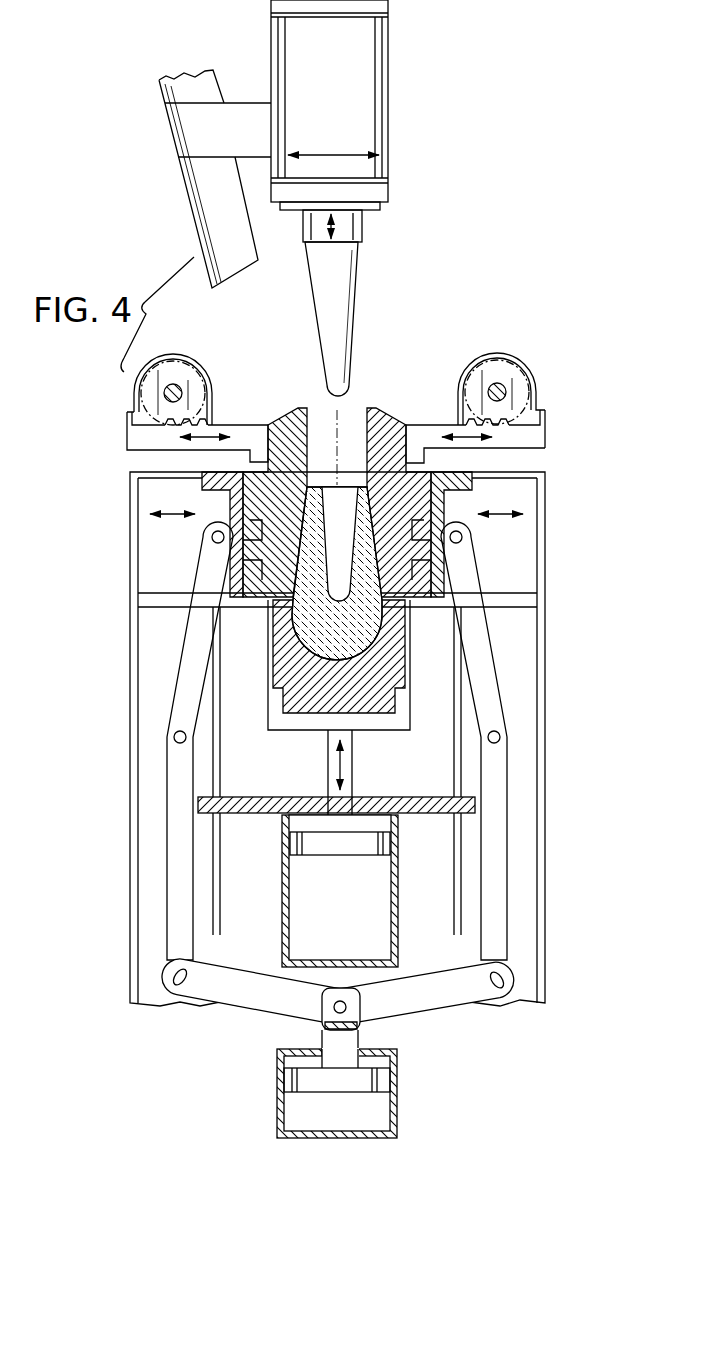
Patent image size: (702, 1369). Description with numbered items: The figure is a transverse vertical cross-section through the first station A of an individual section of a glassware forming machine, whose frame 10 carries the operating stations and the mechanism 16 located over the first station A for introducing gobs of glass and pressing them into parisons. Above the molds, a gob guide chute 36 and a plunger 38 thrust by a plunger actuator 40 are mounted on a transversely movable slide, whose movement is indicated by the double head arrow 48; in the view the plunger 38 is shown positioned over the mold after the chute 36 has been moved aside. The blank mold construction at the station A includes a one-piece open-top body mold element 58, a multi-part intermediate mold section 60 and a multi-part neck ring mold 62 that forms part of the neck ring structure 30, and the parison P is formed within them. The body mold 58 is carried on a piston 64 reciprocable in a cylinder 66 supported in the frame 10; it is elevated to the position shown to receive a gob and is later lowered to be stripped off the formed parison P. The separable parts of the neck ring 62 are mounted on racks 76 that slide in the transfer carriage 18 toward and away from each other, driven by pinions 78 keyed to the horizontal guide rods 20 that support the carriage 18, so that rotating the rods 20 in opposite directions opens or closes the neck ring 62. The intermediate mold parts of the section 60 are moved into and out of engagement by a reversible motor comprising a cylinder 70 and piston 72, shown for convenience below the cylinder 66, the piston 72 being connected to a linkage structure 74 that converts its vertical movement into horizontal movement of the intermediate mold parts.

The frame 10 is at (547, 578).
The mechanism 16 is at (196, 186).
The carriage 18 is at (335, 374).
The guide rods 20 is at (153, 396).
The neck ring structure 30 is at (364, 400).
The gob guide chutes 36 is at (194, 216).
The plungers 38 is at (384, 296).
The plunger actuator 40 is at (341, 57).
The double head arrow 48 is at (350, 155).
The body mold element 58 is at (386, 666).
The intermediate mold section 60 is at (351, 491).
The neck ring mold 62 is at (376, 432).
The piston 64 is at (356, 846).
The cylinder 66 is at (354, 848).
The cylinder 70 is at (353, 1084).
The piston 72 is at (363, 1082).
The linkage structure 74 is at (192, 800).
The racks 76 is at (216, 432).
The pinions 78 is at (190, 375).
The first station A is at (546, 462).
The parison / preform P is at (309, 514).